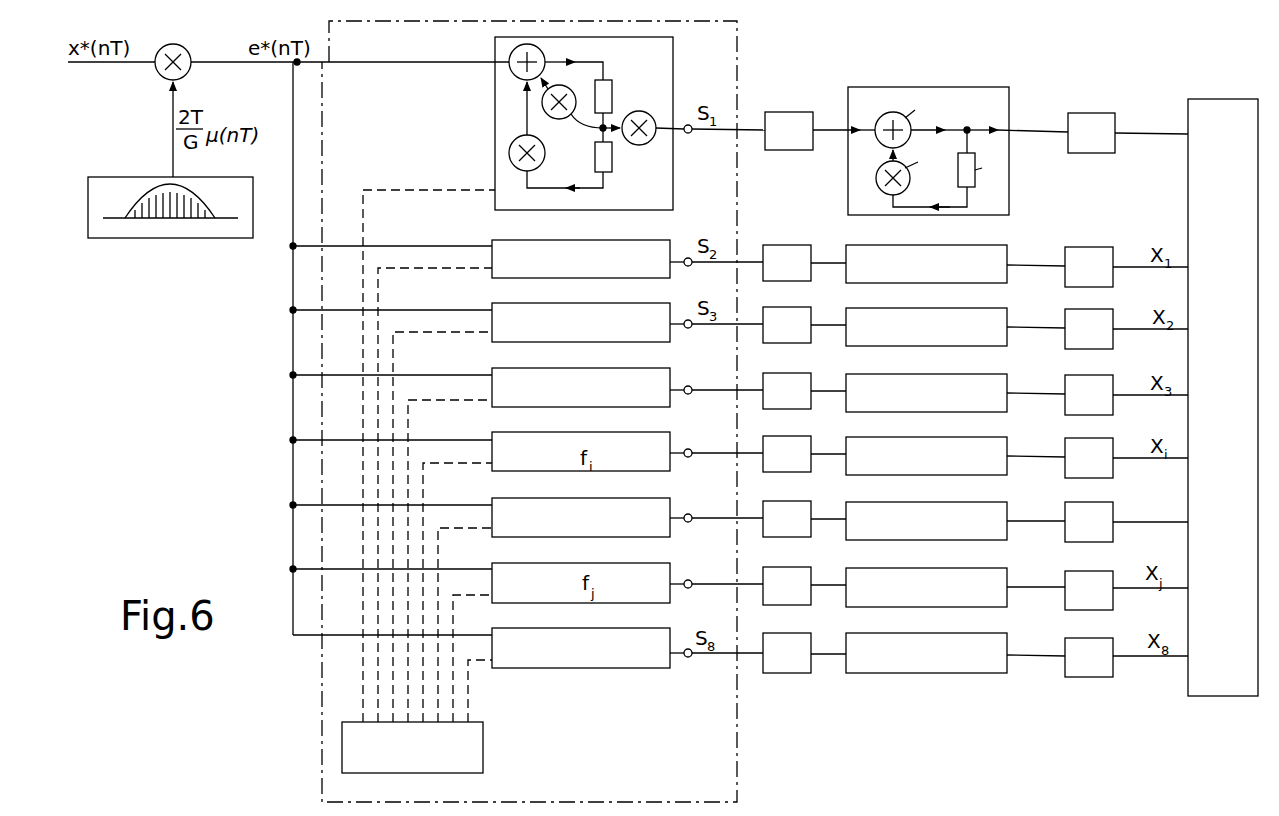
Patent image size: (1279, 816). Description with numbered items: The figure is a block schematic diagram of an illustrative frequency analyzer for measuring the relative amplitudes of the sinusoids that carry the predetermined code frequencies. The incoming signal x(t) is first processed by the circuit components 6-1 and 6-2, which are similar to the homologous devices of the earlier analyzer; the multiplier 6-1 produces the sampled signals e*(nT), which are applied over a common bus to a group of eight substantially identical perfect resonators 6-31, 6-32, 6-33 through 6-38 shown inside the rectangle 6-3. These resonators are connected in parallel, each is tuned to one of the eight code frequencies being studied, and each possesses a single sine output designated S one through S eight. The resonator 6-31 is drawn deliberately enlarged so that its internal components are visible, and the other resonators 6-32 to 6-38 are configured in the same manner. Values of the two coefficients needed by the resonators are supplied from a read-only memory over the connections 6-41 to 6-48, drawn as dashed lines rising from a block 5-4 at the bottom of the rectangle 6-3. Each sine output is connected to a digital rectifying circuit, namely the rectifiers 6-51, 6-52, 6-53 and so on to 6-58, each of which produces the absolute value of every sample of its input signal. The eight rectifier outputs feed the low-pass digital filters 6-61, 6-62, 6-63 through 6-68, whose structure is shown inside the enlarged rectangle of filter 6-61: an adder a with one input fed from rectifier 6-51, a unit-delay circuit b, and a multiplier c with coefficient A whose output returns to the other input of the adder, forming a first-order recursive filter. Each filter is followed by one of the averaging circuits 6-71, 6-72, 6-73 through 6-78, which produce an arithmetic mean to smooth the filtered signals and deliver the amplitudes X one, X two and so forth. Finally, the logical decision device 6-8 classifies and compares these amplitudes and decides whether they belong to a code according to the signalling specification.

The multiplier 6-1 is at (186, 49).
The circuit component 6-2 is at (130, 238).
The rectangle 6-3 is at (742, 62).
The perfect resonator 6-31 is at (673, 203).
The perfect resonator 6-32 is at (672, 278).
The perfect resonator 6-33 is at (672, 342).
The perfect resonator 6-38 is at (670, 668).
The connection 6-41 is at (363, 697).
The connection 6-48 is at (468, 712).
The control unit 5-4 is at (483, 762).
The digital rectifying circuit 6-51 is at (782, 112).
The digital rectifying circuit 6-52 is at (782, 245).
The digital rectifying circuit 6-53 is at (782, 307).
The digital rectifying circuit 6-58 is at (790, 673).
The low-pass digital filter 6-61 is at (925, 87).
The low-pass digital filter 6-62 is at (1000, 283).
The low-pass digital filter 6-63 is at (1000, 346).
The low-pass digital filter 6-68 is at (940, 673).
The averaging circuit 6-71 is at (1085, 113).
The averaging circuit 6-72 is at (1080, 247).
The averaging circuit 6-73 is at (1100, 309).
The averaging circuit 6-78 is at (1073, 677).
The logical decision device 6-8 is at (1222, 696).